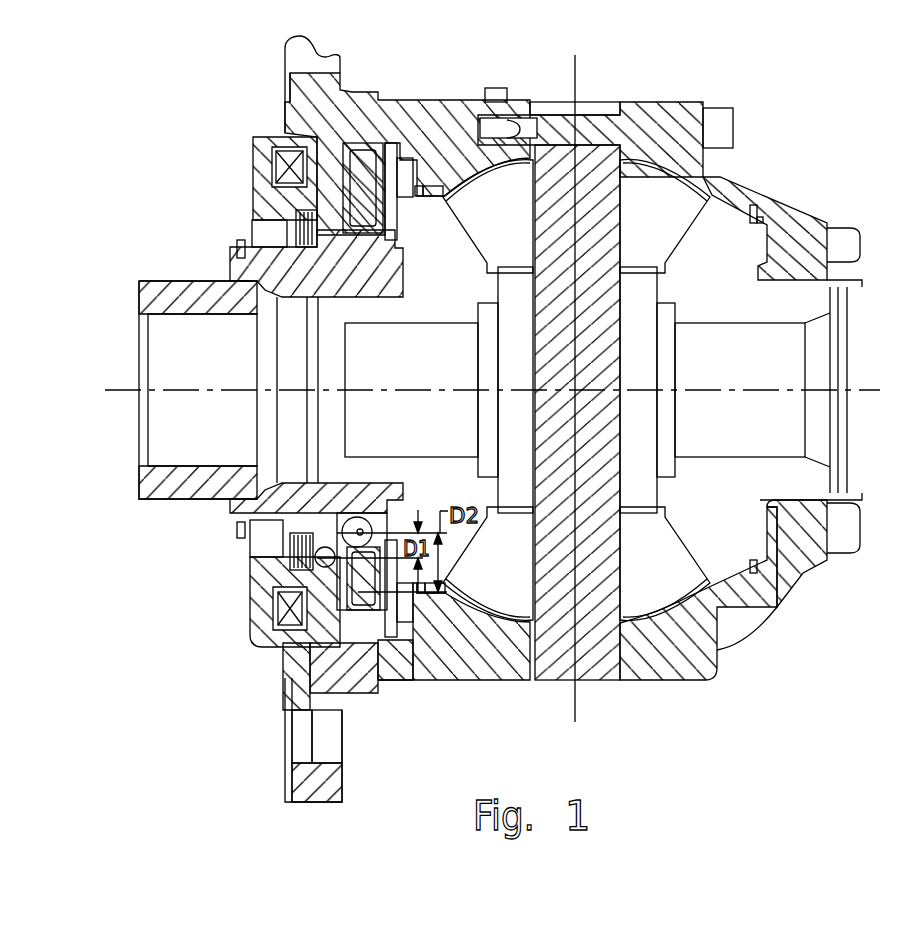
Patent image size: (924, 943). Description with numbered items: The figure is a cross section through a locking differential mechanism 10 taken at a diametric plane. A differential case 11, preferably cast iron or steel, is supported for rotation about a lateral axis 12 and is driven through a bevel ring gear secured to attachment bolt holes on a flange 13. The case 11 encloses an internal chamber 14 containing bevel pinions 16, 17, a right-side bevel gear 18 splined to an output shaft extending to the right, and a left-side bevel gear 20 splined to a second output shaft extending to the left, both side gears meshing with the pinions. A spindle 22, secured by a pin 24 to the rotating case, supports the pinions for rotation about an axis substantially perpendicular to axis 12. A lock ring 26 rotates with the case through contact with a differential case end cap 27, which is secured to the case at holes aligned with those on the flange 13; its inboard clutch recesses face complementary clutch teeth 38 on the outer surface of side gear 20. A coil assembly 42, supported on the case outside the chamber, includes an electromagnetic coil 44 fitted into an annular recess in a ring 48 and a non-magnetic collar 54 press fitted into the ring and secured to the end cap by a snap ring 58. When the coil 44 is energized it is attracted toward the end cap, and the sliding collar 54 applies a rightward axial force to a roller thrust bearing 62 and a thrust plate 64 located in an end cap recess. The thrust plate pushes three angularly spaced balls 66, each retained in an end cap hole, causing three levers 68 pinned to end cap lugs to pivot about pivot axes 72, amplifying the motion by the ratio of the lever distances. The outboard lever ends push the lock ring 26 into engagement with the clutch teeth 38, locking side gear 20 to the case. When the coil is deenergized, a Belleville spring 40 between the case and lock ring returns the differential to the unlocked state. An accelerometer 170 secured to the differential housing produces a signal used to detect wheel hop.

The differential mechanism 10 is at (849, 108).
The differential case 11 is at (425, 100).
The lateral axis 12 is at (857, 390).
The flange 13 is at (320, 92).
The internal chamber 14 is at (723, 165).
The bevel pinion 16 is at (640, 188).
The bevel pinion 17 is at (651, 592).
The right-side bevel gear 18 is at (730, 294).
The left-side bevel gear 20 is at (447, 294).
The spindle 22 is at (590, 662).
The pin 24 is at (627, 130).
The lock ring 26 is at (396, 187).
The differential case end cap 27 is at (149, 293).
The clutch teeth 38 is at (388, 233).
The Belleville spring 40 is at (443, 200).
The coil assembly 42 is at (187, 125).
The electromagnetic coil 44 is at (280, 173).
The ring 48 is at (252, 608).
The non-magnetic collar 54 is at (253, 232).
The snap ring 58 is at (243, 250).
The roller thrust bearing 62 is at (298, 232).
The thrust plate 64 is at (373, 165).
The balls 66 is at (286, 562).
The levers 68 is at (321, 558).
The pivot axis 72 is at (357, 531).
The accelerometer 170 is at (494, 89).